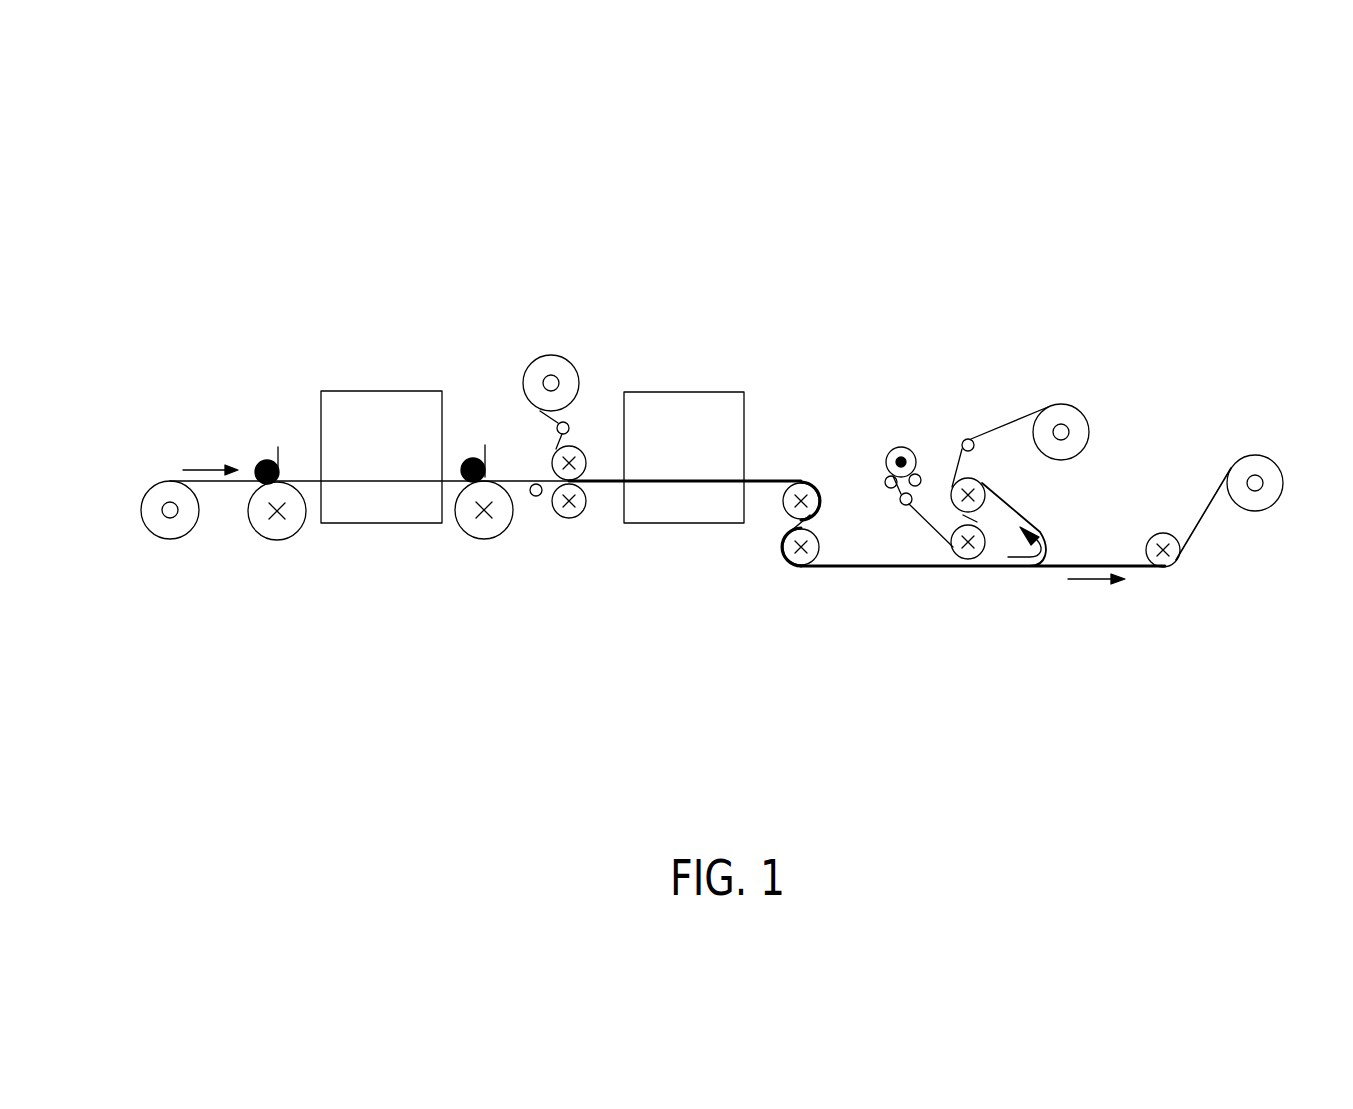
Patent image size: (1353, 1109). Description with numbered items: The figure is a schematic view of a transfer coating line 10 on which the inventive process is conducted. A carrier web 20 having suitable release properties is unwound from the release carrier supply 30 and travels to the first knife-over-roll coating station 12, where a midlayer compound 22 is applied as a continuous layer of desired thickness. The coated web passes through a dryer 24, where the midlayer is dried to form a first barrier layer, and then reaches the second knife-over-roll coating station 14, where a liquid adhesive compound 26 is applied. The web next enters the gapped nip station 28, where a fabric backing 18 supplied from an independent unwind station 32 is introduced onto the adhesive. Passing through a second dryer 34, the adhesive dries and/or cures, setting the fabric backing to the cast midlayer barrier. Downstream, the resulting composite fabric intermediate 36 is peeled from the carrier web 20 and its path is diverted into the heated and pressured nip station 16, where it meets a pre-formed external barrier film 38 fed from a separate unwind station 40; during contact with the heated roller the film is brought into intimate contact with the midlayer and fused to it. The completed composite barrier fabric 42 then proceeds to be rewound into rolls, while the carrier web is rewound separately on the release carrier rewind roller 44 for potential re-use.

The transfer coating line 10 is at (713, 312).
The first knife-over-roll coating station 12 is at (280, 540).
The second knife-over-roll coating station 14 is at (486, 540).
The heated nip station 16 is at (966, 567).
The fabric backing 18 is at (568, 423).
The carrier web 20 is at (170, 481).
The midlayer compound 22 is at (267, 458).
The dryer 24 is at (397, 391).
The liquid adhesive compound 26 is at (474, 458).
The gapped nip station 28 is at (574, 518).
The release carrier supply 30 is at (172, 539).
The independent unwind station 32 is at (552, 356).
The dryer 34 is at (693, 392).
The composite fabric intermediate 36 is at (1043, 530).
The external barrier film 38 is at (1007, 420).
The separate unwind station 40 is at (1086, 413).
The composite barrier fabric 42 is at (900, 446).
The release carrier rewind roller 44 is at (1255, 511).